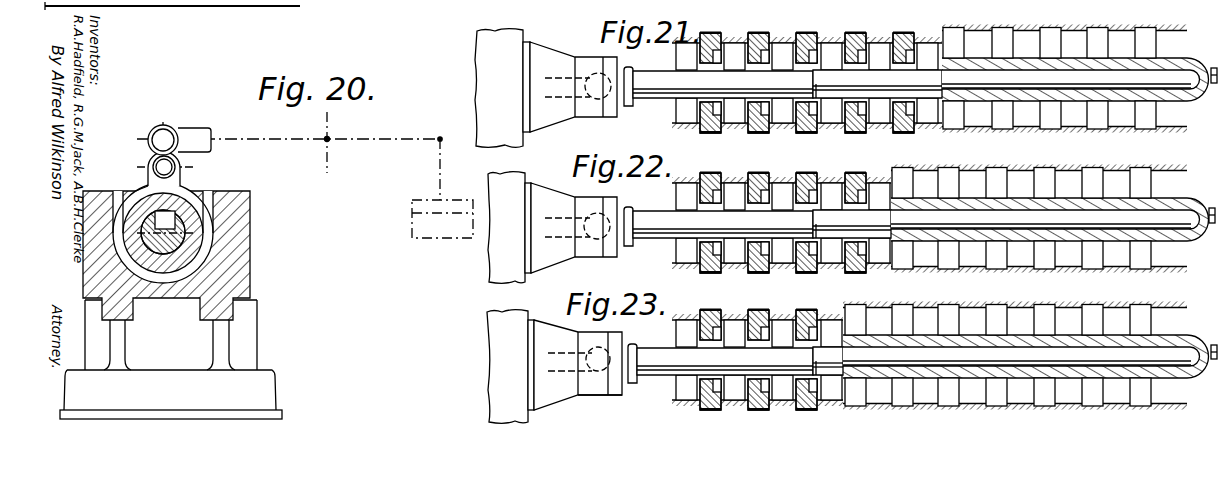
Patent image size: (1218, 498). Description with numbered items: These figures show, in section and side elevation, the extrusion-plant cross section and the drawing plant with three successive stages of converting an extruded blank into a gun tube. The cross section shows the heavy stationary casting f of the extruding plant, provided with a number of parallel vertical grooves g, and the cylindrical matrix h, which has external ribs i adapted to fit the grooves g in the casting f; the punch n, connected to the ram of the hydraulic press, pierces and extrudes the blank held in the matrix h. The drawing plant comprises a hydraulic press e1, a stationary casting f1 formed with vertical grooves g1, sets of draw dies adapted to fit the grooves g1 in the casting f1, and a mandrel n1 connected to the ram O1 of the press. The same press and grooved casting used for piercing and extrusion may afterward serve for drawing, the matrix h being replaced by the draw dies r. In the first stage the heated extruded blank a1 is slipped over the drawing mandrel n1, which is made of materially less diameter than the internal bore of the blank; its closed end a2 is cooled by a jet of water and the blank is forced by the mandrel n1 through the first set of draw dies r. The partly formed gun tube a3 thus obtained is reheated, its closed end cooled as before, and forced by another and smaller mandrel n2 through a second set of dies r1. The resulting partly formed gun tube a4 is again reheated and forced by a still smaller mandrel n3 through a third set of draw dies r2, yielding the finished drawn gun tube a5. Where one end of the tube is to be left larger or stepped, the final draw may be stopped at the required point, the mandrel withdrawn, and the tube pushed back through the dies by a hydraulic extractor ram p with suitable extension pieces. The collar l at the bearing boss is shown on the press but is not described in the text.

In FIG. 20, the external ribs i is at (135, 184).
In FIG. 20, the cylindrical matrix h is at (124, 191).
In FIG. 20, the punch n is at (187, 213).
In FIG. 20, the extruded blank a1 is at (213, 221).
In FIG. 20, the vertical grooves g is at (217, 218).
In FIG. 20, the stationary casting f is at (252, 257).
In FIG. 21, the hydraulic press e1 is at (499, 88).
In FIG. 22, the hydraulic press e1 is at (506, 228).
In FIG. 23, the hydraulic press e1 is at (507, 367).
In FIG. 21, the ram O1 is at (570, 87).
In FIG. 22, the ram O1 is at (571, 228).
In FIG. 23, the ram O1 is at (575, 365).
In FIG. 21, the mandrel n1 is at (656, 90).
In FIG. 22, the mandrel n2 is at (650, 226).
In FIG. 23, the mandrel n3 is at (655, 364).
In FIG. 21, the draw dies r is at (762, 32).
In FIG. 22, the second set of dies r1 is at (762, 172).
In FIG. 23, the third set of draw dies r2 is at (762, 309).
In FIG. 21, the stationary casting f1 is at (1118, 44).
In FIG. 22, the stationary casting f1 is at (925, 254).
In FIG. 23, the stationary casting f1 is at (1072, 388).
In FIG. 22, the vertical grooves g1 is at (982, 153).
In FIG. 21, the closed end a2 is at (1043, 59).
In FIG. 21, the partly formed gun tube a3 is at (1199, 66).
In FIG. 22, the partly formed gun tube a4 is at (1110, 199).
In FIG. 23, the drawn gun tube a5 is at (1027, 370).
In FIG. 21, the hydraulic extractor ram p is at (1213, 84).
In FIG. 22, the hydraulic extractor ram p is at (1211, 224).
In FIG. 23, the hydraulic extractor ram p is at (1213, 360).
In FIG. 23, the boss collar l is at (603, 380).